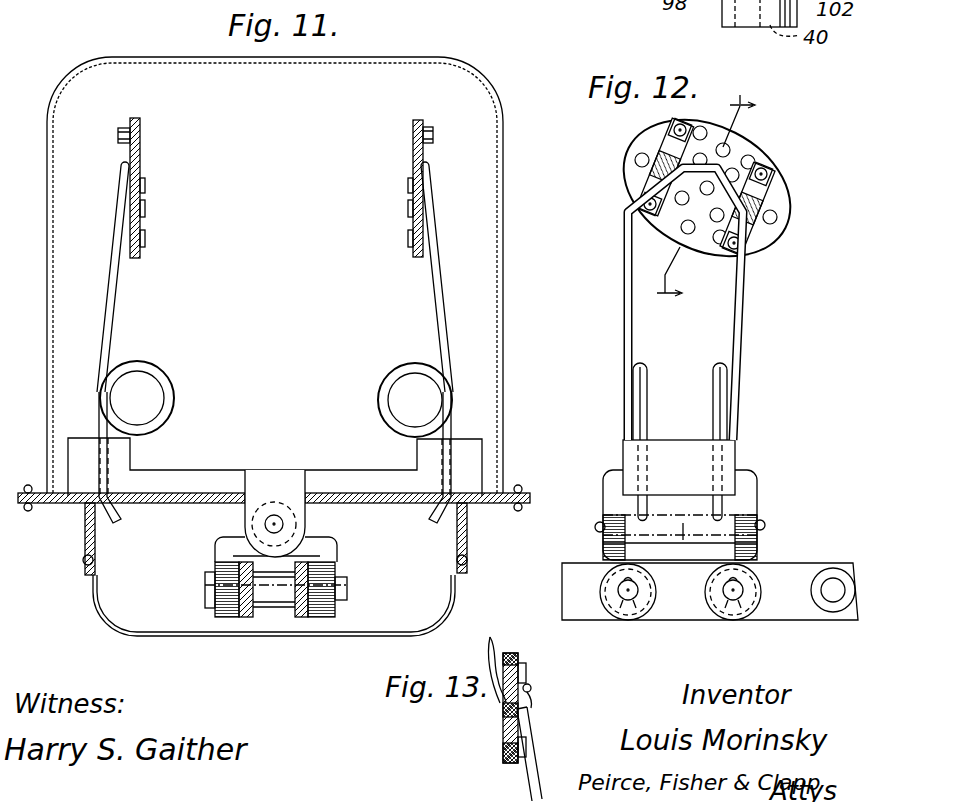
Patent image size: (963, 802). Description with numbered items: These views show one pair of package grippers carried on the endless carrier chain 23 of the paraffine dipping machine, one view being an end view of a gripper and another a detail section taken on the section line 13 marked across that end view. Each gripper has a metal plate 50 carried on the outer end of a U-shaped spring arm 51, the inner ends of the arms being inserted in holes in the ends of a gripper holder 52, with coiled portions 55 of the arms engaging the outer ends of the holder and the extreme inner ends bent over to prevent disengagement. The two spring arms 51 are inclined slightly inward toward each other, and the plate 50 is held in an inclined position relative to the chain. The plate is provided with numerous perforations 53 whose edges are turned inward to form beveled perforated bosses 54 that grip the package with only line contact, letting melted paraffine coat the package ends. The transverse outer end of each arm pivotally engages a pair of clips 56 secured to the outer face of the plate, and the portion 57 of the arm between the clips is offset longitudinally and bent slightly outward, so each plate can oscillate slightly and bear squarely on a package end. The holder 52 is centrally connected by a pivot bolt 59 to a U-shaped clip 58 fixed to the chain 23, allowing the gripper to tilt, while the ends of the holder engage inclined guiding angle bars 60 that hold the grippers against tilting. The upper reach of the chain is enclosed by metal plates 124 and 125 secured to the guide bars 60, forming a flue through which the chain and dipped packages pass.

In FIG. 12, the section line 13- 13 is at (708, 203).
In FIG. 11, the endless carrier chain 23 is at (255, 615).
In FIG. 12, the endless carrier chain 23 is at (772, 605).
In FIG. 11, the gripper plate 50 is at (141, 135).
In FIG. 12, the gripper plate 50 is at (786, 205).
In FIG. 13, the gripper plate 50 is at (527, 728).
In FIG. 11, the spring arm 51 is at (115, 308).
In FIG. 12, the spring arm 51 is at (685, 304).
In FIG. 13, the spring arm 51 is at (538, 777).
In FIG. 11, the gripper holder 52 is at (197, 477).
In FIG. 12, the gripper holder 52 is at (728, 454).
In FIG. 12, the perforation 53 is at (712, 222).
In FIG. 13, the perforation 53 is at (503, 747).
In FIG. 11, the perforated boss 54 is at (146, 240).
In FIG. 13, the perforated boss 54 is at (498, 655).
In FIG. 11, the coiled portion 55 is at (167, 385).
In FIG. 12, the coiled portion 55 is at (717, 388).
In FIG. 11, the clip 56 is at (128, 160).
In FIG. 12, the clip 56 is at (757, 150).
In FIG. 13, the clip 56 is at (522, 657).
In FIG. 12, the offset portion of spring arm 57 is at (670, 230).
In FIG. 13, the offset portion of spring arm 57 is at (530, 698).
In FIG. 11, the U-shaped clip 58 is at (320, 543).
In FIG. 12, the U-shaped clip 58 is at (722, 552).
In FIG. 11, the pivot bolt 59 is at (277, 525).
In FIG. 12, the pivot bolt 59 is at (683, 545).
In FIG. 11, the guiding angle bar 60 is at (87, 538).
In FIG. 11, the metal plate 124 is at (383, 58).
In FIG. 11, the metal plate 125 is at (165, 633).